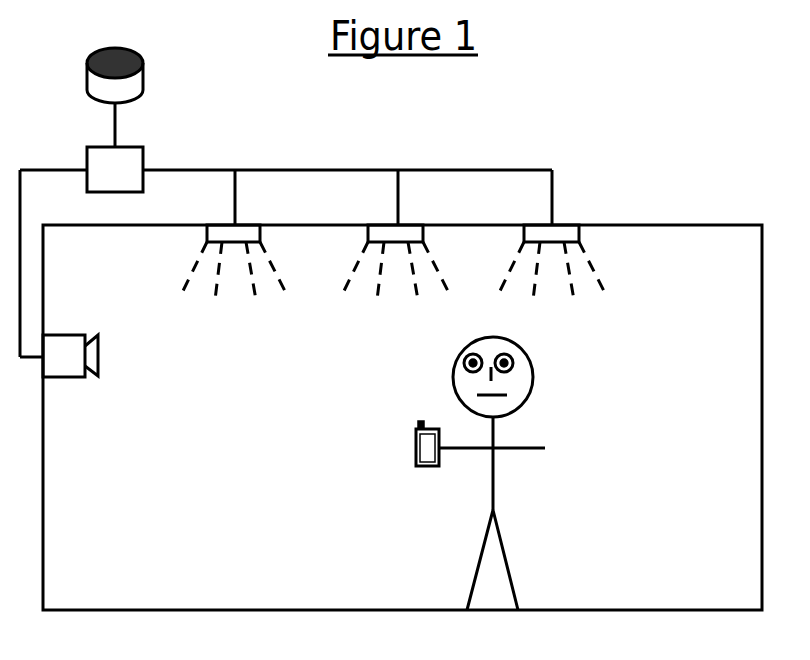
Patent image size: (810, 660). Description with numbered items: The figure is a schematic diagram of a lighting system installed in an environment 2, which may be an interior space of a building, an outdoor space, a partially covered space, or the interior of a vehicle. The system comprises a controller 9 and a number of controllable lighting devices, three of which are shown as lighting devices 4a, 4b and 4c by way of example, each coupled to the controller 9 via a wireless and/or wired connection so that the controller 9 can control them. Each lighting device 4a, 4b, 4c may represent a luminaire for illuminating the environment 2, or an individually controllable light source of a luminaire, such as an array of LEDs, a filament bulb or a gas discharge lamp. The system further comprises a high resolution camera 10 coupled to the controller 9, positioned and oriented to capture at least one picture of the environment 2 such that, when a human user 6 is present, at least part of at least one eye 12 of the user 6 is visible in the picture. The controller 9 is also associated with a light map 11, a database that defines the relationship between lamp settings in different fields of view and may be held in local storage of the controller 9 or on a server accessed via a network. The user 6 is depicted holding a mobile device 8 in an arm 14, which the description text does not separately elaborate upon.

The environment 2 is at (678, 225).
The lighting device 4a is at (568, 232).
The lighting device 4b is at (411, 232).
The lighting device 4c is at (253, 232).
The user 6 is at (524, 473).
The mobile device 8 is at (415, 447).
The controller 9 is at (143, 155).
The camera 10 is at (60, 340).
The light map 11 is at (143, 85).
The eye 12 is at (513, 362).
The arm 14 is at (525, 445).